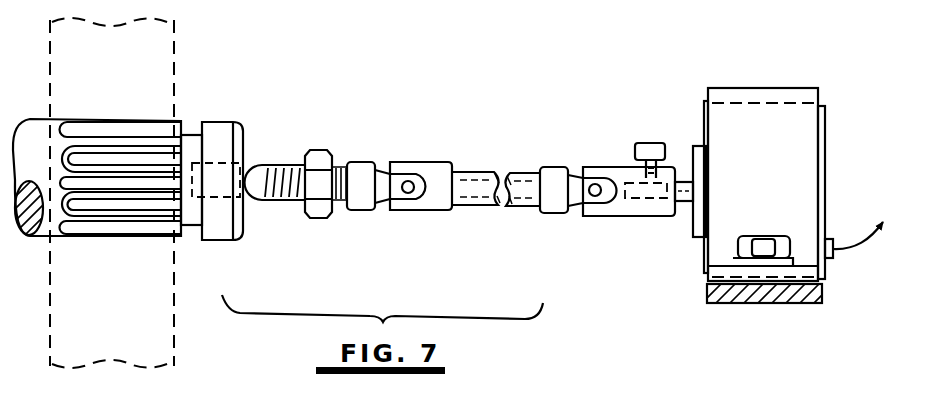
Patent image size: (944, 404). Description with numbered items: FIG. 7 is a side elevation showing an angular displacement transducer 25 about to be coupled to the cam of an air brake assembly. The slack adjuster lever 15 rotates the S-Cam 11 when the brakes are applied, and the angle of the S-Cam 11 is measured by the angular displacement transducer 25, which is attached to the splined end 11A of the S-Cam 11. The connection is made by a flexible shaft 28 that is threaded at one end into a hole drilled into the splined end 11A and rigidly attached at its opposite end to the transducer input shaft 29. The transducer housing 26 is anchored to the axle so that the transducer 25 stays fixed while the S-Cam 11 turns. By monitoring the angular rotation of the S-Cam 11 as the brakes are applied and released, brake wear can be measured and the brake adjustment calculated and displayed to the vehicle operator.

The slack adjuster lever 15 is at (158, 58).
The splined end 11A is at (149, 116).
The S-Cam 11 is at (244, 127).
The flexible shaft 28 is at (497, 158).
The transducer input shaft 29 is at (684, 178).
The angular displacement transducer 25 is at (690, 241).
The transducer housing 26 is at (787, 91).